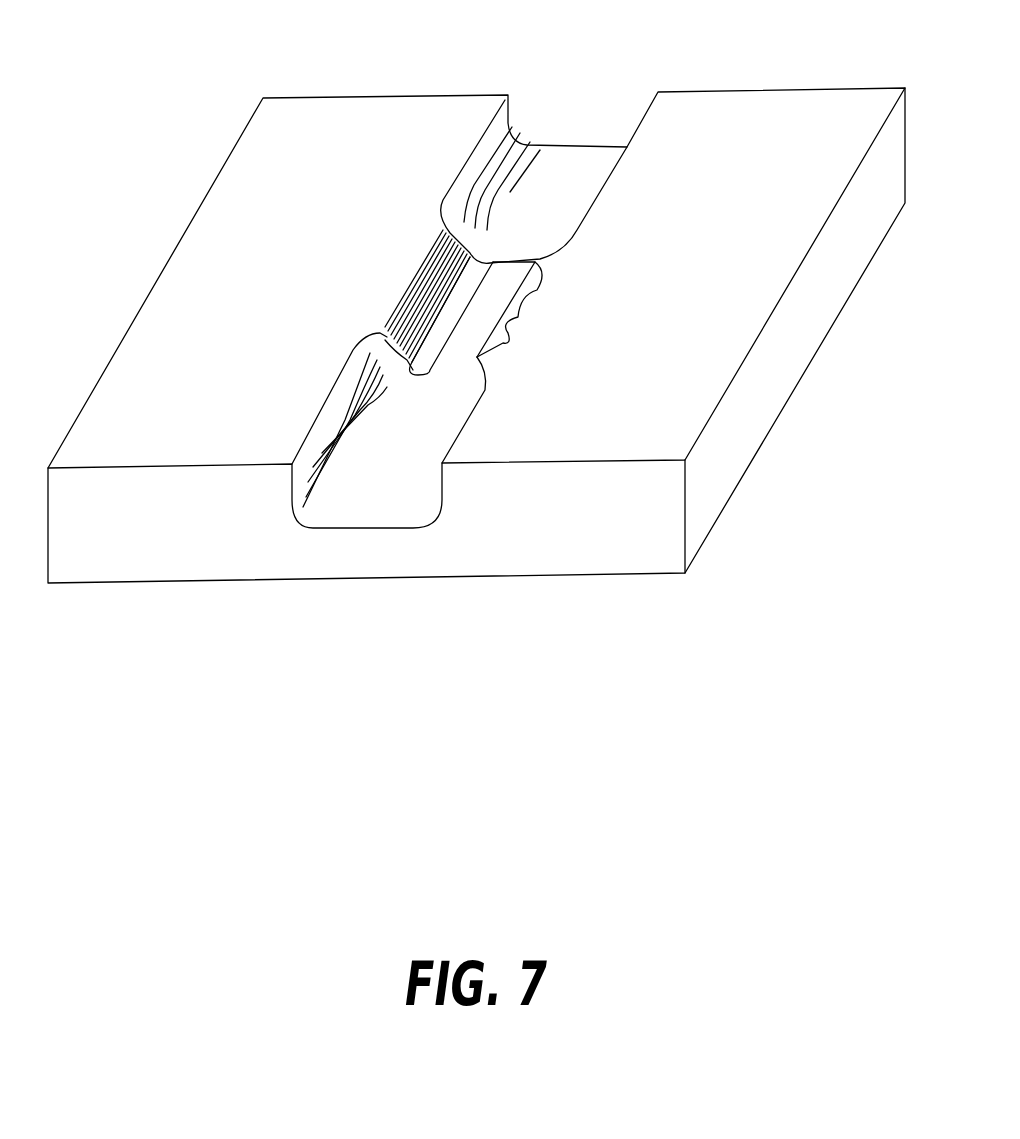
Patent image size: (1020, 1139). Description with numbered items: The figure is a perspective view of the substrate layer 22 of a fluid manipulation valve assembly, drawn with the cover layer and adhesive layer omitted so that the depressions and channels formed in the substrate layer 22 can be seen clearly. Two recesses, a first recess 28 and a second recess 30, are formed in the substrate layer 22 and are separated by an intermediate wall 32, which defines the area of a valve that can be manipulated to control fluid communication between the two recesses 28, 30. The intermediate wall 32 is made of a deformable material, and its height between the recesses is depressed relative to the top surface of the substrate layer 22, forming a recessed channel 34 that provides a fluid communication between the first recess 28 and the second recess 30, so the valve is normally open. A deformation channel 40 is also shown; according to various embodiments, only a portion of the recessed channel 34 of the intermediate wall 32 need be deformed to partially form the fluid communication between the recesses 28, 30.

The substrate layer 22 is at (155, 702).
The first recess 28 is at (492, 198).
The second recess 30 is at (349, 440).
The intermediate wall 32 is at (518, 317).
The recessed channel 34 is at (402, 328).
The deformation channel 40 is at (422, 358).